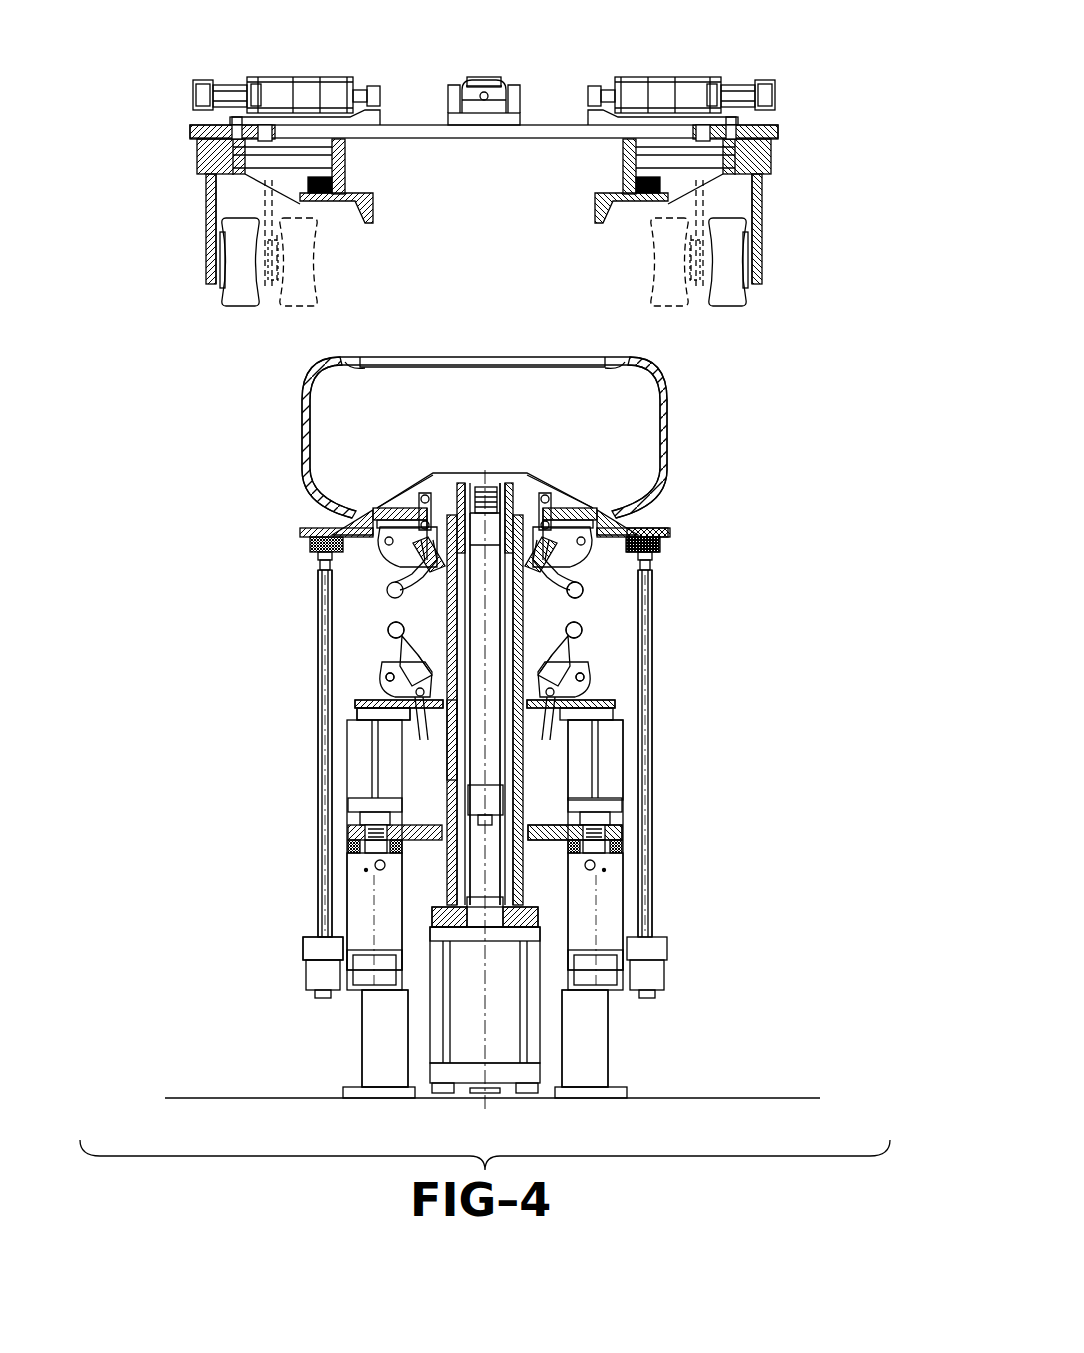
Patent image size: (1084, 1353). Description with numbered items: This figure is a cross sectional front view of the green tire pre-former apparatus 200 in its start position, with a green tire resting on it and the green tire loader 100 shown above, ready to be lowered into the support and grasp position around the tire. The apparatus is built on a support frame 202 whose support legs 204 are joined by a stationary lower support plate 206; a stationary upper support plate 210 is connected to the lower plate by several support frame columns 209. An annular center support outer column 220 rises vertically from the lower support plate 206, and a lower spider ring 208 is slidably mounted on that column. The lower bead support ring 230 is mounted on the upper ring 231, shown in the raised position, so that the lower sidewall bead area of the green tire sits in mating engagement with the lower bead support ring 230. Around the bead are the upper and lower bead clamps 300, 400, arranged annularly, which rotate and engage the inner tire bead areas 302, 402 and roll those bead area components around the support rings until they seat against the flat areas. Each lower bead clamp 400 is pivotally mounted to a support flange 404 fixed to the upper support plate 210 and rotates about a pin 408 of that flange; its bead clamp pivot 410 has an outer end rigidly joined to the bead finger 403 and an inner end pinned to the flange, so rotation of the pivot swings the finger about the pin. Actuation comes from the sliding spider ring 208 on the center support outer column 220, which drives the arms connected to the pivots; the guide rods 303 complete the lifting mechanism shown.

The green tire loader 100 is at (781, 322).
The green tire pre-former apparatus 200 is at (240, 518).
The support frame 202 is at (262, 921).
The support legs 204 is at (362, 1063).
The lower support plate 206 is at (612, 834).
The lower spider ring 208 is at (592, 778).
The support frame columns 209 is at (347, 723).
The upper support plate 210 is at (355, 705).
The center support outer column 220 is at (447, 742).
The lower bead support ring 230 is at (650, 528).
The upper ring 231 is at (660, 546).
The upper bead clamps 300 is at (380, 563).
The upper inner tire bead area 302 is at (352, 367).
The guide rod 303 is at (395, 594).
The lower bead clamps 400 is at (600, 657).
The lower inner tire bead area 402 is at (360, 513).
The bead finger 403 is at (565, 630).
The support flange 404 is at (390, 692).
The pin 408 is at (378, 658).
The bead clamp pivot 410 is at (586, 720).